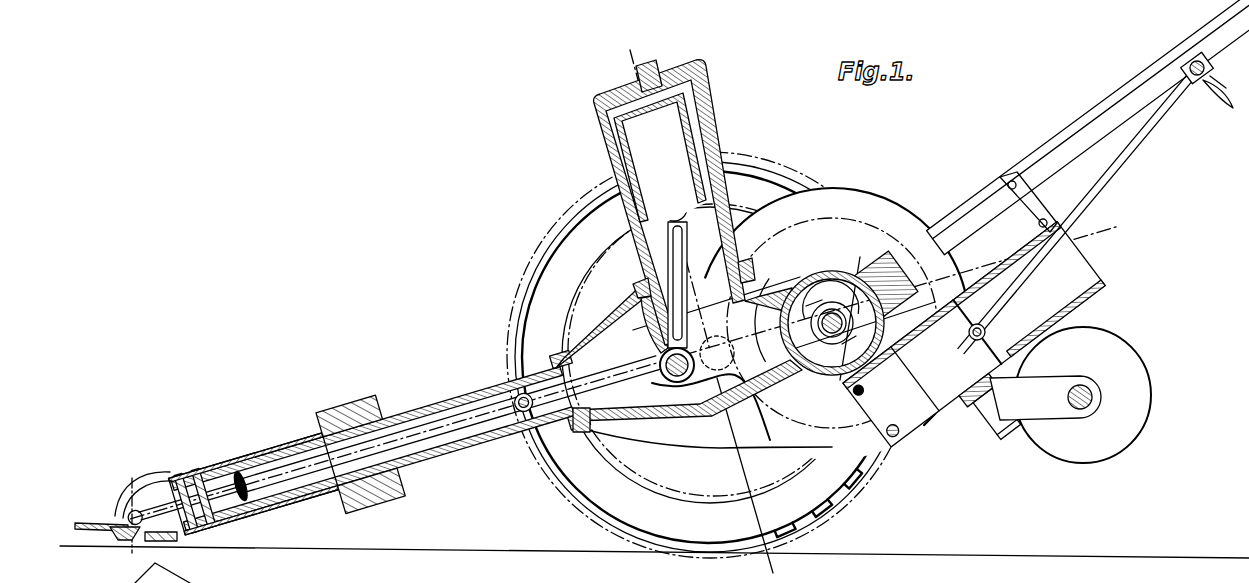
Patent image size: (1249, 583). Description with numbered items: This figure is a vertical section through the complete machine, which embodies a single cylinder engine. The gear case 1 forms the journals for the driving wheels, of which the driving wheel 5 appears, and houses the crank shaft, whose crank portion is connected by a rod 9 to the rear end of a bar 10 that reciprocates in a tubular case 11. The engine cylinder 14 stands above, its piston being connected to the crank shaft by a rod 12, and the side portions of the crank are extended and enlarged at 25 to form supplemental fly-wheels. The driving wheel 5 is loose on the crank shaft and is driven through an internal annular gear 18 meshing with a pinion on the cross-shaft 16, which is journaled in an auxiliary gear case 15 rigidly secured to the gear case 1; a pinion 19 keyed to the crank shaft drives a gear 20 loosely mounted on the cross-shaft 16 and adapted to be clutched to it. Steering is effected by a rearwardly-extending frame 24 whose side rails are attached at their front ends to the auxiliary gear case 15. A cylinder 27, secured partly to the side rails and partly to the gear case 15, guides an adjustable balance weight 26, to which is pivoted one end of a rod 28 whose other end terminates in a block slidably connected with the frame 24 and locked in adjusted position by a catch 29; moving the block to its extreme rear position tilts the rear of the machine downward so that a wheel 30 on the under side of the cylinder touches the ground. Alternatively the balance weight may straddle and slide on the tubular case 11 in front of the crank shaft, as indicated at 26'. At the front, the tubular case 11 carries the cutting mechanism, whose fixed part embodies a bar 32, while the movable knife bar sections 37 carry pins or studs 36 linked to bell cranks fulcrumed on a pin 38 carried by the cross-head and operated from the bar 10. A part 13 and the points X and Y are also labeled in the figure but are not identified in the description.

The gear case 1 is at (705, 448).
The driving wheel 5 is at (577, 506).
The rod 9 is at (656, 363).
The bar 10 is at (377, 457).
The tubular case 11 is at (412, 412).
The rod 12 is at (688, 318).
The sleeve / pin 13 is at (173, 476).
The engine cylinder 14 is at (706, 132).
The auxiliary gear case 15 is at (802, 287).
The cross-shaft 16 is at (833, 346).
The internal annular gear 18 is at (705, 497).
The pinion 19 is at (679, 355).
The gear 20 is at (857, 230).
The rearwardly-extending frame 24 is at (1072, 134).
The supplemental fly-wheels 25 is at (760, 359).
The balance weight 26 is at (974, 334).
The balance weight 26' is at (359, 398).
The cylinder 27 is at (1013, 368).
The rod 28 is at (1083, 211).
The catch 29 is at (1208, 73).
The wheel 30 is at (1084, 376).
The bar 32 is at (201, 508).
The pin or stud 36 is at (138, 506).
The knife bar sections 37 is at (110, 524).
The pin 38 is at (203, 477).
The axis X is at (275, 470).
The axis point Y is at (759, 344).